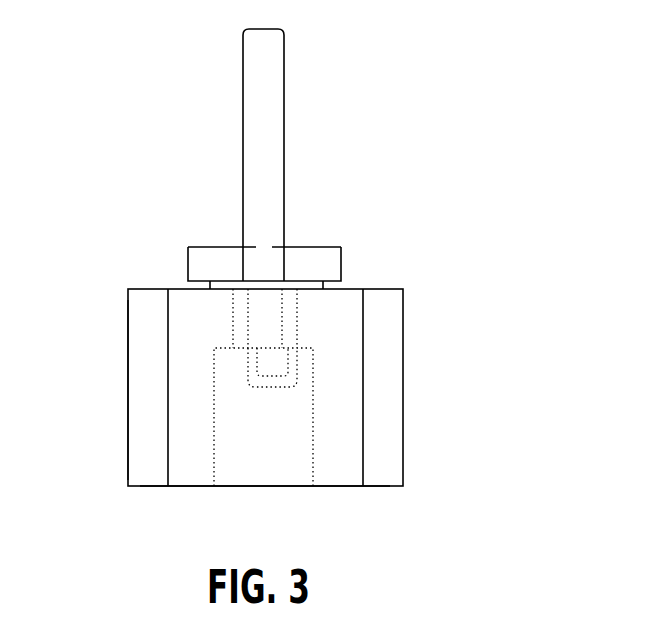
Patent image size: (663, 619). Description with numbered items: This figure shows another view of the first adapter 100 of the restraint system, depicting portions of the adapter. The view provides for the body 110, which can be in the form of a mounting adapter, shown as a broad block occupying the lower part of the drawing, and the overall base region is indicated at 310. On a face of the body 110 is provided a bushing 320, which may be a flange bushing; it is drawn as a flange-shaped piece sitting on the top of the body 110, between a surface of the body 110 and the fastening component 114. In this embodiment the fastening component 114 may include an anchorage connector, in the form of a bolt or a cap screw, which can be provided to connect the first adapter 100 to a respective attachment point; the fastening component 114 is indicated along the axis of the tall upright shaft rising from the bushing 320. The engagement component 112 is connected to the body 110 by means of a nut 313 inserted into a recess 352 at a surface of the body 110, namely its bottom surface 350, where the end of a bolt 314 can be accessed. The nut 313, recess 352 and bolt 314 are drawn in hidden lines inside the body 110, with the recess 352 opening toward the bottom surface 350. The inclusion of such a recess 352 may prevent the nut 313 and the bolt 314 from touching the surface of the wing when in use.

The first adapter 100 is at (378, 117).
The engagement component 112 is at (243, 93).
The fastening component 114 is at (313, 330).
The body 110 is at (128, 365).
The base 310 is at (388, 289).
The nut 313 is at (240, 387).
The bolt 314 is at (258, 337).
The bushing 320 is at (190, 283).
The bottom surface 350 is at (190, 487).
The recess 352 is at (287, 455).